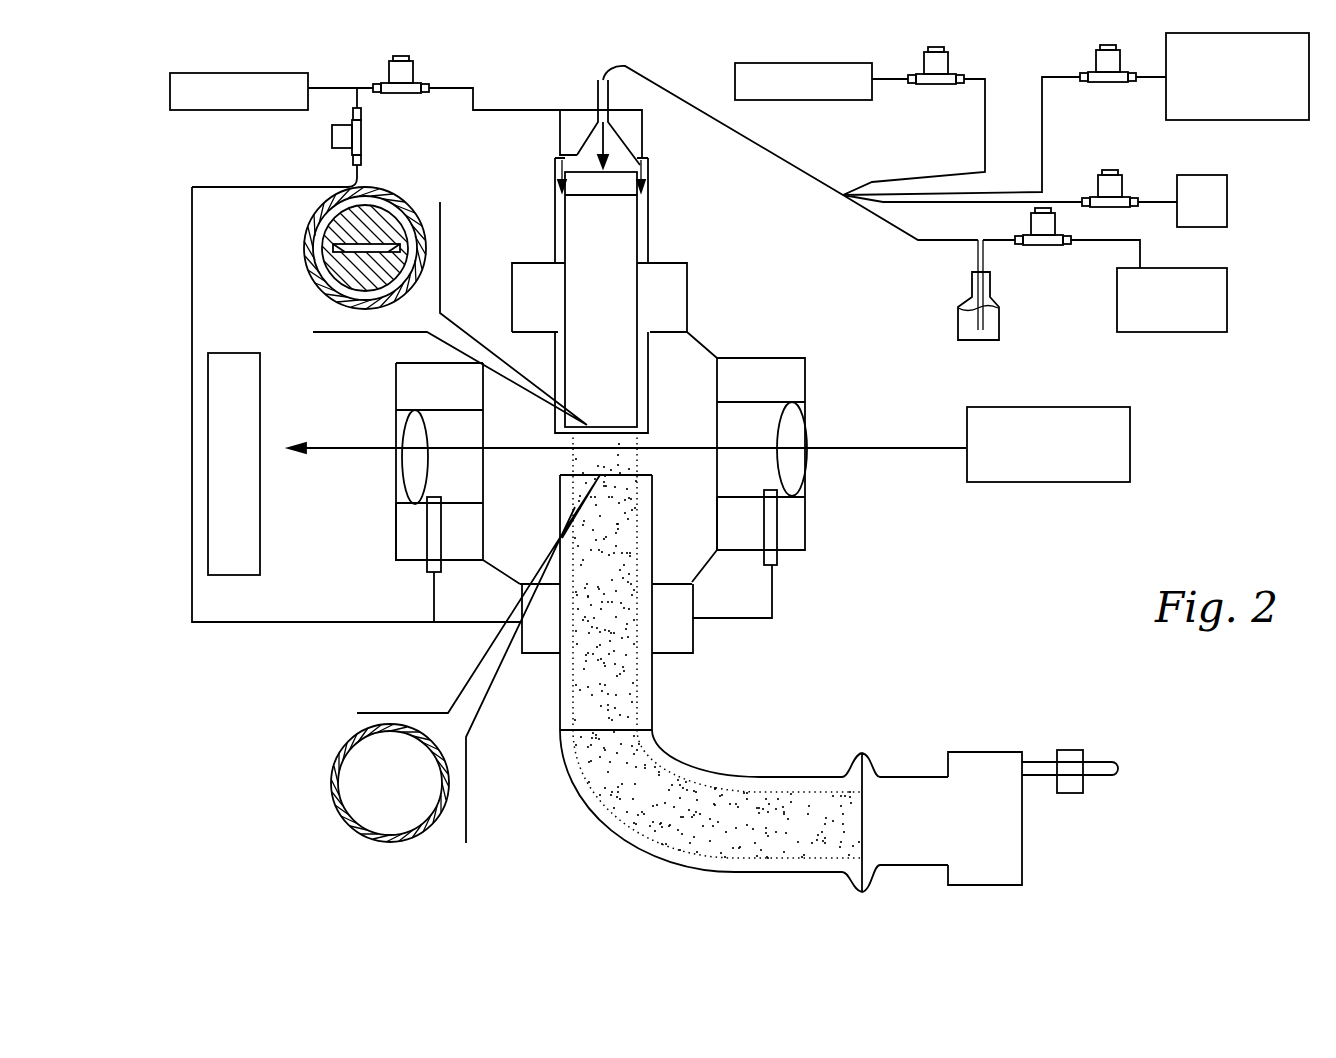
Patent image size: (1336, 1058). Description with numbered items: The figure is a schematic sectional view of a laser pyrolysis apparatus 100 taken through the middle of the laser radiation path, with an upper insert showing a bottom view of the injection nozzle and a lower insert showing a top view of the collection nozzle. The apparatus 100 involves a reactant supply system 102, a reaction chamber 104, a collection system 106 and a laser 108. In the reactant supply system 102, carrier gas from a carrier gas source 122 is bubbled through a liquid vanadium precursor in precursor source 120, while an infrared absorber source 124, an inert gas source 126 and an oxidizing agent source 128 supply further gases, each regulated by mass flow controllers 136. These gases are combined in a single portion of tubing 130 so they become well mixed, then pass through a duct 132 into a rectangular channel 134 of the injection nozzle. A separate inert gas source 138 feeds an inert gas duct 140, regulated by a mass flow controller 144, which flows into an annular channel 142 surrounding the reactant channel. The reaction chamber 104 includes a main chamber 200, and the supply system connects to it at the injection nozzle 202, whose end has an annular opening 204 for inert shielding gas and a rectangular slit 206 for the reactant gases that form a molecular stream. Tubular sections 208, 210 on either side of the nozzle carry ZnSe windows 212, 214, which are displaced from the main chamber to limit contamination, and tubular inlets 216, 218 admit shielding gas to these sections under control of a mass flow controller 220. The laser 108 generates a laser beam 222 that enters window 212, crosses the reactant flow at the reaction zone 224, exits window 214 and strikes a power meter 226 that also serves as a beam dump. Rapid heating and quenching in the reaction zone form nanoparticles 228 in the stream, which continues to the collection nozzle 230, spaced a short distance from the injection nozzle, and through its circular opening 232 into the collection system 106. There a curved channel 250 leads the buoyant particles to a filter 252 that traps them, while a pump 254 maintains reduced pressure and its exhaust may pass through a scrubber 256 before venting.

The pyrolysis apparatus 100 is at (346, 378).
The reactant supply system 102 is at (804, 213).
The reaction chamber 104 is at (703, 330).
The collection system 106 is at (840, 668).
The laser 108 is at (1025, 482).
The vanadium precursor source 120 is at (1000, 325).
The carrier gas source 122 is at (1187, 325).
The infrared absorber source 124 is at (1270, 120).
The inert gas source 126 is at (735, 73).
The oxidizing agent source 128 is at (1227, 186).
The tubing 130 is at (608, 70).
The duct 132 is at (584, 148).
The rectangular channel 134 is at (613, 186).
The mass flow controllers 136 is at (949, 58).
The inert gas source 138 is at (176, 112).
The inert gas duct 140 is at (557, 164).
The annular channel 142 is at (574, 216).
The mass flow controller 144 is at (395, 93).
The main chamber 200 is at (518, 352).
The injection nozzle 202 is at (361, 190).
The annular opening 204 is at (326, 212).
The rectangular slit 206 is at (322, 237).
The tubular section 208 is at (796, 512).
The tubular section 210 is at (406, 520).
The window 212 is at (790, 418).
The window 214 is at (402, 465).
The tubular inlet 216 is at (770, 557).
The tubular inlet 218 is at (427, 565).
The mass flow controller 220 is at (332, 150).
The laser beam 222 is at (873, 448).
The reaction zone 224 is at (641, 451).
The power meter 226 is at (243, 557).
The nanoparticles 228 is at (640, 463).
The collection nozzle 230 is at (433, 674).
The circular opening 232 is at (347, 787).
The curved channel 250 is at (690, 763).
The filter 252 is at (873, 772).
The pump 254 is at (978, 752).
The scrubber 256 is at (1067, 752).